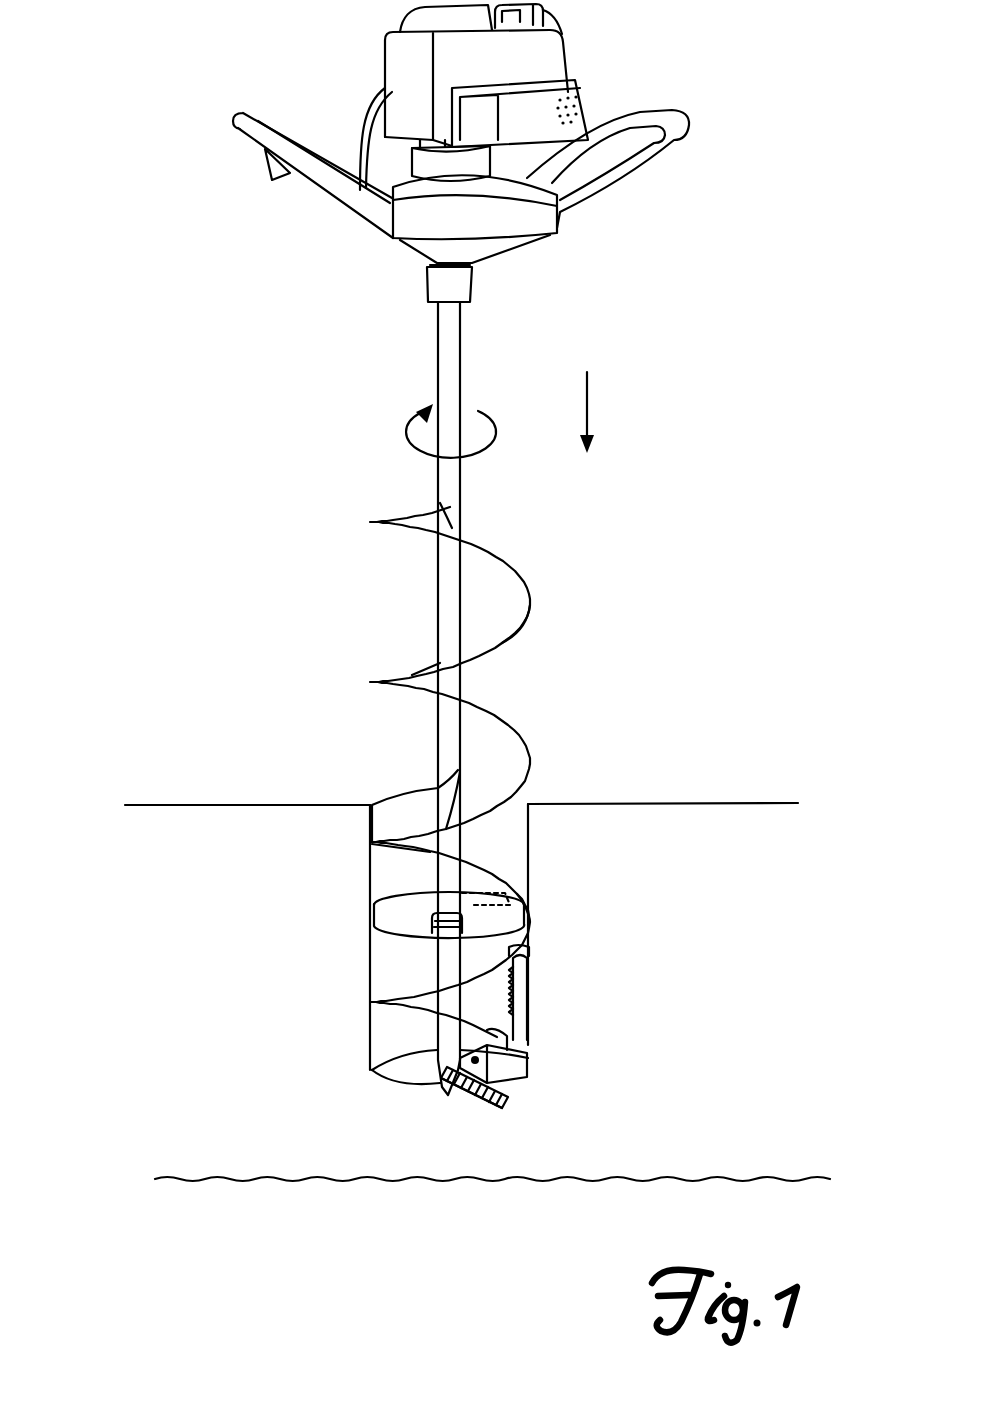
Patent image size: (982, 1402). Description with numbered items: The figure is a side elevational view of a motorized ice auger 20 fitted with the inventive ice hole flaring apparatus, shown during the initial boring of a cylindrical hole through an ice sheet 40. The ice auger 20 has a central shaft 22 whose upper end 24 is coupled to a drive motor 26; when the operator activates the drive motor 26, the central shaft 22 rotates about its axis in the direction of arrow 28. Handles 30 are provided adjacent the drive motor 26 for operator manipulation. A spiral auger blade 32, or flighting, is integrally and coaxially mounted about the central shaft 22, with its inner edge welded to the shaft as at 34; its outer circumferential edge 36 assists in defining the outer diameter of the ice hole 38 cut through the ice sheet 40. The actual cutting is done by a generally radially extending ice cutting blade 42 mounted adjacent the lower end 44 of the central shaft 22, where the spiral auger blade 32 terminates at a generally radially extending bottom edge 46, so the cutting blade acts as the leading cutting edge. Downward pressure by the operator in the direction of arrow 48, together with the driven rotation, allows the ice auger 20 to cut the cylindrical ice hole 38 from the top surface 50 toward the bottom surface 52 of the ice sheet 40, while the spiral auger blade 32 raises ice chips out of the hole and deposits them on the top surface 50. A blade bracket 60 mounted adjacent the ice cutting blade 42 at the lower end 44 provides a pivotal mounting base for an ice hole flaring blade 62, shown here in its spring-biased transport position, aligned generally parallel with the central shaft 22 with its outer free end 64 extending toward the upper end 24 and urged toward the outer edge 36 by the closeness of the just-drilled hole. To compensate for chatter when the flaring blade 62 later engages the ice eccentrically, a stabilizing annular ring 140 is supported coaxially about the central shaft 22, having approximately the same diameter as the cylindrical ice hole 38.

The ice auger 20 is at (658, 247).
The central shaft 22 is at (450, 478).
The upper end 24 is at (465, 305).
The drive motor 26 is at (538, 58).
The arrow 28 is at (407, 445).
The handles 30 is at (312, 175).
The spiral auger blade 32 is at (517, 597).
The weld 34 is at (440, 763).
The outer circumferential edge 36 is at (507, 640).
The ice hole 38 is at (378, 800).
The ice sheet 40 is at (710, 862).
The ice cutting blade 42 is at (483, 1105).
The lower end 44 is at (440, 1077).
The bottom edge 46 is at (503, 1106).
The arrow 48 is at (592, 393).
The top surface 50 is at (605, 802).
The bottom surface 52 is at (575, 1182).
The blade bracket 60 is at (525, 1065).
The ice hole flaring blade 62 is at (522, 998).
The outer free end 64 is at (520, 942).
The annular ring 140 is at (395, 923).